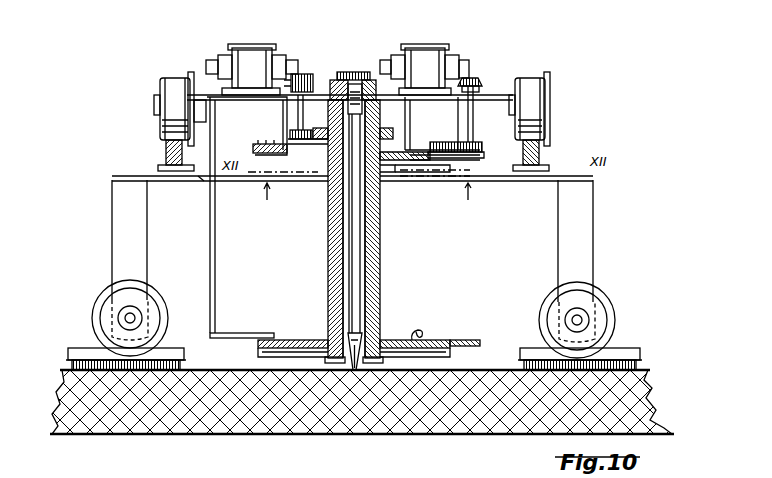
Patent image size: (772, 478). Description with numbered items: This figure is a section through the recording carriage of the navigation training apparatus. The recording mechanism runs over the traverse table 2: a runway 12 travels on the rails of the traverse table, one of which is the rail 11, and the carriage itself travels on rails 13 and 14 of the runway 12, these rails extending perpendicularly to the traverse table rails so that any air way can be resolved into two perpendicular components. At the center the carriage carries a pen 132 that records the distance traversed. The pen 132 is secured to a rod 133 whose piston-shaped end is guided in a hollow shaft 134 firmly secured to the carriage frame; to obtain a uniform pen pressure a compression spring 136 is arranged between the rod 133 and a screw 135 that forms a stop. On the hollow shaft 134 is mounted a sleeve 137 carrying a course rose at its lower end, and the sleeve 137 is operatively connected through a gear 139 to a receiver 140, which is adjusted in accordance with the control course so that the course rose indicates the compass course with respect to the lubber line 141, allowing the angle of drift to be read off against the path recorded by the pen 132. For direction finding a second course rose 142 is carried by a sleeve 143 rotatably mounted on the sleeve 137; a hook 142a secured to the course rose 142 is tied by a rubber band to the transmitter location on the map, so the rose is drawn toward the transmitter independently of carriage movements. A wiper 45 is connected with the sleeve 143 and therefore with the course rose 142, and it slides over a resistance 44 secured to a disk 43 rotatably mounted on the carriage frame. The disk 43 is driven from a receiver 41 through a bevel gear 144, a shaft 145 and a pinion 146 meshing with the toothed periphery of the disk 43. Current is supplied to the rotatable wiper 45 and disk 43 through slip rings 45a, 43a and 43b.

The traverse table 2 is at (266, 436).
The rail 11 is at (90, 348).
The runway 12 is at (172, 182).
The rail 13 is at (545, 148).
The rail 14 is at (166, 150).
The receiver 41 is at (419, 69).
The disk 43 is at (412, 160).
The slip ring 43a is at (444, 150).
The slip ring 43b is at (432, 150).
The resistance 44 is at (455, 172).
The wiper 45 is at (436, 172).
The slip ring 45a is at (398, 172).
The pen 132 is at (362, 340).
The rod 133 is at (352, 296).
The hollow shaft 134 is at (366, 124).
The screw 135 is at (360, 72).
The compression spring 136 is at (311, 76).
The sleeve 137 is at (372, 265).
The gear 139 is at (298, 118).
The receiver 140 is at (236, 50).
The lubber line 141 is at (246, 333).
The second course rose 142 is at (298, 340).
The hook 142a is at (424, 332).
The sleeve 143 is at (380, 252).
The bevel gear 144 is at (466, 78).
The shaft 145 is at (474, 110).
The pinion 146 is at (480, 150).